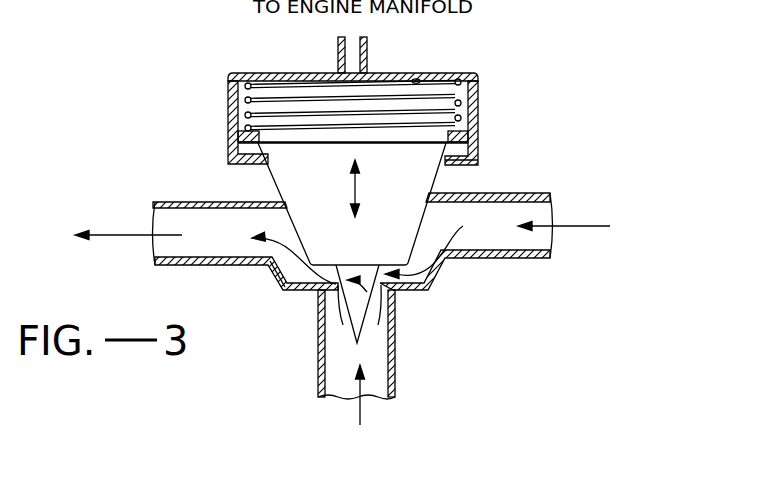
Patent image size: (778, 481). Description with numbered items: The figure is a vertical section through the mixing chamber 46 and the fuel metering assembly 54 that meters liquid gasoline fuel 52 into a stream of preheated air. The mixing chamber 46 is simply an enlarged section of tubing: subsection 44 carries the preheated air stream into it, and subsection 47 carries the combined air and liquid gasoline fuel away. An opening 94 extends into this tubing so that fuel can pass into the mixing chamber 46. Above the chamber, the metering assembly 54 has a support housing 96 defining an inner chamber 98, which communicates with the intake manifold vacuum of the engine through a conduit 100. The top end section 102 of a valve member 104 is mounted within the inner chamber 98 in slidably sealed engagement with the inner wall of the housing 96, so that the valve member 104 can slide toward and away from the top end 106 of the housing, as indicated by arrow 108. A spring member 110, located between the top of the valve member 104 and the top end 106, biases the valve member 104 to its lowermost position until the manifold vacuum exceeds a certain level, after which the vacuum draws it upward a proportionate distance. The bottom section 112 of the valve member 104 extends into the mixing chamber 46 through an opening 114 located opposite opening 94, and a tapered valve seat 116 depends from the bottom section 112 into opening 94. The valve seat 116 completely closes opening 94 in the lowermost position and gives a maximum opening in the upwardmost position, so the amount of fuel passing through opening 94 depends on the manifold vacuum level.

The subsection of mixing chamber tubing 44 is at (520, 258).
The mixing chamber 46 is at (265, 291).
The subsection of mixing chamber tubing 47 is at (201, 266).
The liquid gasoline fuel 52 is at (395, 378).
The fuel metering assembly 54 is at (522, 146).
The opening 94 is at (392, 307).
The support housing 96 is at (484, 110).
The inner chamber 98 is at (418, 79).
The conduit 100 is at (366, 52).
The top end section of valve member 102 is at (270, 141).
The valve member 104 is at (262, 180).
The top end of housing 106 is at (450, 72).
The arrow 108 is at (358, 185).
The spring member 110 is at (247, 99).
The bottom section of valve member 112 is at (407, 222).
The opening 114 is at (433, 194).
The tapered valve seat 116 is at (358, 322).